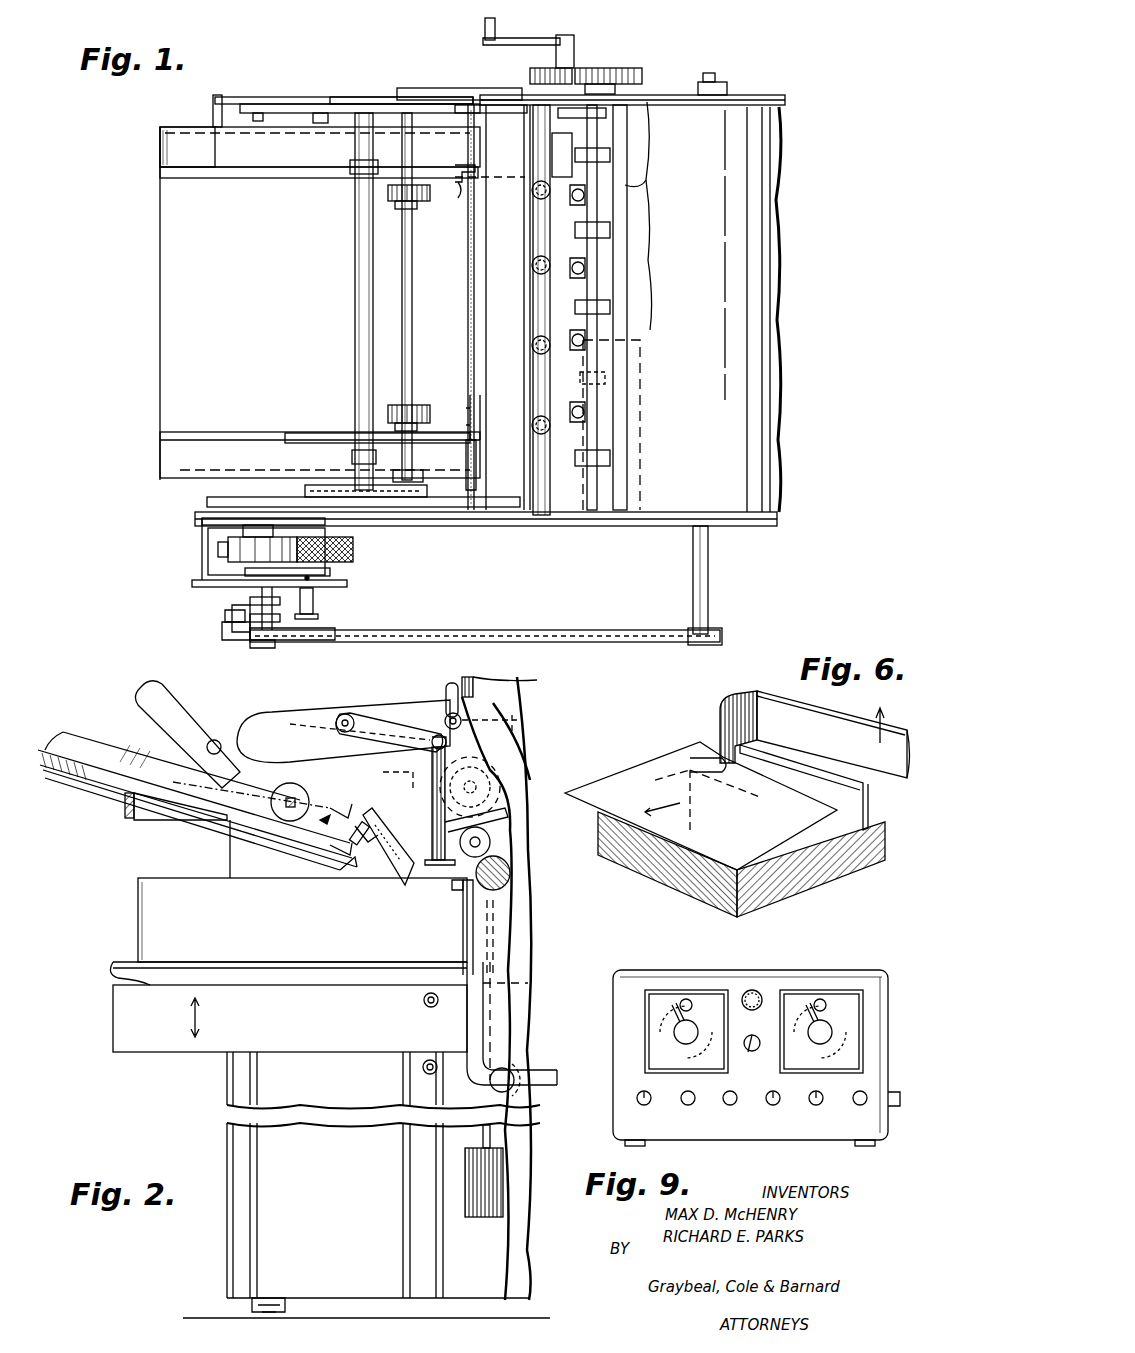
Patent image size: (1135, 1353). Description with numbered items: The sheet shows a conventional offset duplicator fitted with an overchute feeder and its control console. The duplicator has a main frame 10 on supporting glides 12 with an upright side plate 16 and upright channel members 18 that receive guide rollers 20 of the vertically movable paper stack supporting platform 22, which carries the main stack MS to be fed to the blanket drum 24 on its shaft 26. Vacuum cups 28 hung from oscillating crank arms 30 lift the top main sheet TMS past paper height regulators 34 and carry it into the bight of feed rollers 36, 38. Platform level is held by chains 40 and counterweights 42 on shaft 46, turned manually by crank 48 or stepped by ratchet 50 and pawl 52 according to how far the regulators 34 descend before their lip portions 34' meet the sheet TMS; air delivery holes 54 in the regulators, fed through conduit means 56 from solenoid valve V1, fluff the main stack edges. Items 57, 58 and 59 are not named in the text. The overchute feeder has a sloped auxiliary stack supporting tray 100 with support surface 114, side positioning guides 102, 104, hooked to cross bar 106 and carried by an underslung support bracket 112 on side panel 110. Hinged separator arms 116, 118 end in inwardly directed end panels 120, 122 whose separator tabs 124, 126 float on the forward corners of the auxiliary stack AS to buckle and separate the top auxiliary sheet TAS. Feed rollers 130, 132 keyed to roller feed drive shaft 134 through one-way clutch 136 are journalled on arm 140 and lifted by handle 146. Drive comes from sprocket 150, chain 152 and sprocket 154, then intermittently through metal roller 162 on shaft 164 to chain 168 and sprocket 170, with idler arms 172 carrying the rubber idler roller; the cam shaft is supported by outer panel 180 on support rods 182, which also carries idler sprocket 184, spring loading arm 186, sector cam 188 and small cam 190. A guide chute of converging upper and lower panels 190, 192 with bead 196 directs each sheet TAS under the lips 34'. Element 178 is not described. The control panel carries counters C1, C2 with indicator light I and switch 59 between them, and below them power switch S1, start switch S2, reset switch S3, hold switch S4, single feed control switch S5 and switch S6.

In FIG. 1, the main frame 10 is at (657, 530).
In FIG. 2, the main frame 10 is at (292, 741).
In FIG. 2, the supporting glide 12 is at (286, 1306).
In FIG. 1, the upright side plate 16 is at (500, 520).
In FIG. 2, the upright channel member 18 is at (408, 1162).
In FIG. 2, the guide roller 20 is at (422, 1068).
In FIG. 2, the paper stack supporting platform 22 is at (313, 1034).
In FIG. 1, the blanket drum 24 is at (688, 396).
In FIG. 2, the blanket drum 24 is at (520, 700).
In FIG. 1, the shaft 26 is at (708, 565).
In FIG. 1, the vacuum cups 28 is at (533, 260).
In FIG. 2, the vacuum cups 28 is at (508, 813).
In FIG. 1, the crank arm 30 is at (525, 100).
In FIG. 2, the crank arm 30 is at (370, 722).
In FIG. 1, the paper height regulator 34 is at (544, 307).
In FIG. 2, the lip portion 34' is at (441, 910).
In FIG. 1, the feed roller 36 is at (612, 156).
In FIG. 2, the feed roller 36 is at (490, 842).
In FIG. 1, the feed roller 38 is at (612, 292).
In FIG. 2, the feed roller 38 is at (510, 873).
In FIG. 1, the chain 40 is at (647, 102).
In FIG. 2, the chain 40 is at (530, 987).
In FIG. 2, the counterweight 42 is at (478, 1208).
In FIG. 1, the shaft 46 is at (605, 120).
In FIG. 2, the shaft 46 is at (500, 774).
In FIG. 1, the crank 48 is at (483, 40).
In FIG. 2, the crank 48 is at (395, 785).
In FIG. 1, the ratchet 50 is at (600, 66).
In FIG. 1, the pawl 52 is at (530, 72).
In FIG. 2, the pawl 52 is at (430, 735).
In FIG. 2, the air delivery holes 54 is at (473, 900).
In FIG. 1, the conduit means 56 is at (625, 354).
In FIG. 2, the conduit means 56 is at (470, 1023).
In FIG. 1, the plate 57 is at (238, 640).
In FIG. 1, the block 58 is at (230, 622).
In FIG. 9, the control knob 59 is at (756, 1050).
In FIG. 1, the auxiliary stack supporting tray 100 is at (165, 454).
In FIG. 2, the auxiliary stack supporting tray 100 is at (69, 722).
In FIG. 1, the side positioning guide 102 is at (160, 428).
In FIG. 2, the side positioning guide 102 is at (104, 745).
In FIG. 6, the side positioning guide 102 is at (868, 795).
In FIG. 1, the side positioning guide 104 is at (160, 176).
In FIG. 1, the cross bar 106 is at (355, 272).
In FIG. 1, the side panel 110 is at (367, 104).
In FIG. 1, the support bracket 112 is at (213, 100).
In FIG. 2, the support bracket 112 is at (125, 806).
In FIG. 1, the support surface 114 is at (160, 298).
In FIG. 1, the separator arm 116 is at (472, 452).
In FIG. 6, the separator arm 116 is at (825, 715).
In FIG. 1, the separator arm 118 is at (447, 170).
In FIG. 2, the separator arm 118 is at (348, 815).
In FIG. 1, the end panel 120 is at (470, 438).
In FIG. 6, the end panel 120 is at (725, 718).
In FIG. 1, the end panel 122 is at (475, 168).
In FIG. 2, the end panel 122 is at (345, 868).
In FIG. 1, the separator tab 124 is at (476, 418).
In FIG. 6, the separator tab 124 is at (718, 755).
In FIG. 1, the separator tab 126 is at (478, 190).
In FIG. 2, the separator tab 126 is at (372, 828).
In FIG. 1, the feed roller 130 is at (425, 405).
In FIG. 1, the feed roller 132 is at (425, 203).
In FIG. 2, the feed roller 132 is at (292, 790).
In FIG. 1, the roller feed drive shaft 134 is at (412, 280).
In FIG. 2, the roller feed drive shaft 134 is at (305, 795).
In FIG. 1, the one-way clutch 136 is at (440, 470).
In FIG. 1, the arm 140 is at (320, 104).
In FIG. 1, the handle 146 is at (258, 104).
In FIG. 2, the handle 146 is at (168, 690).
In FIG. 1, the sprocket 150 is at (695, 628).
In FIG. 1, the chain 152 is at (570, 632).
In FIG. 1, the sprocket 154 is at (262, 648).
In FIG. 1, the metal roller 162 is at (353, 558).
In FIG. 1, the shaft 164 is at (325, 528).
In FIG. 1, the chain 168 is at (392, 497).
In FIG. 1, the sprocket 170 is at (230, 600).
In FIG. 1, the arm 172 is at (235, 528).
In FIG. 1, the shaft 178 is at (347, 583).
In FIG. 1, the outer panel 180 is at (200, 590).
In FIG. 1, the support rod 182 is at (202, 556).
In FIG. 1, the idler sprocket 184 is at (335, 632).
In FIG. 1, the spring loading arm 186 is at (316, 617).
In FIG. 1, the sector cam 188 is at (285, 630).
In FIG. 1, the upper panel 190 is at (520, 296).
In FIG. 2, the upper panel 190 is at (412, 850).
In FIG. 2, the lower panel 192 is at (365, 875).
In FIG. 2, the bead 196 is at (405, 884).
In FIG. 6, the auxiliary stack AS is at (705, 888).
In FIG. 6, the top auxiliary sheet TAS is at (615, 770).
In FIG. 2, the top main sheet TMS is at (298, 880).
In FIG. 2, the main stack MS is at (302, 922).
In FIG. 2, the solenoid valve V1 is at (513, 1088).
In FIG. 9, the power indicator light I is at (752, 990).
In FIG. 9, the counter C1 is at (662, 993).
In FIG. 9, the counter C2 is at (798, 993).
In FIG. 9, the power switch S1 is at (638, 1102).
In FIG. 9, the start switch S2 is at (683, 1103).
In FIG. 9, the reset switch S3 is at (727, 1104).
In FIG. 9, the hold switch S4 is at (770, 1104).
In FIG. 9, the single feed control switch S5 is at (813, 1104).
In FIG. 9, the switch S6 is at (857, 1104).